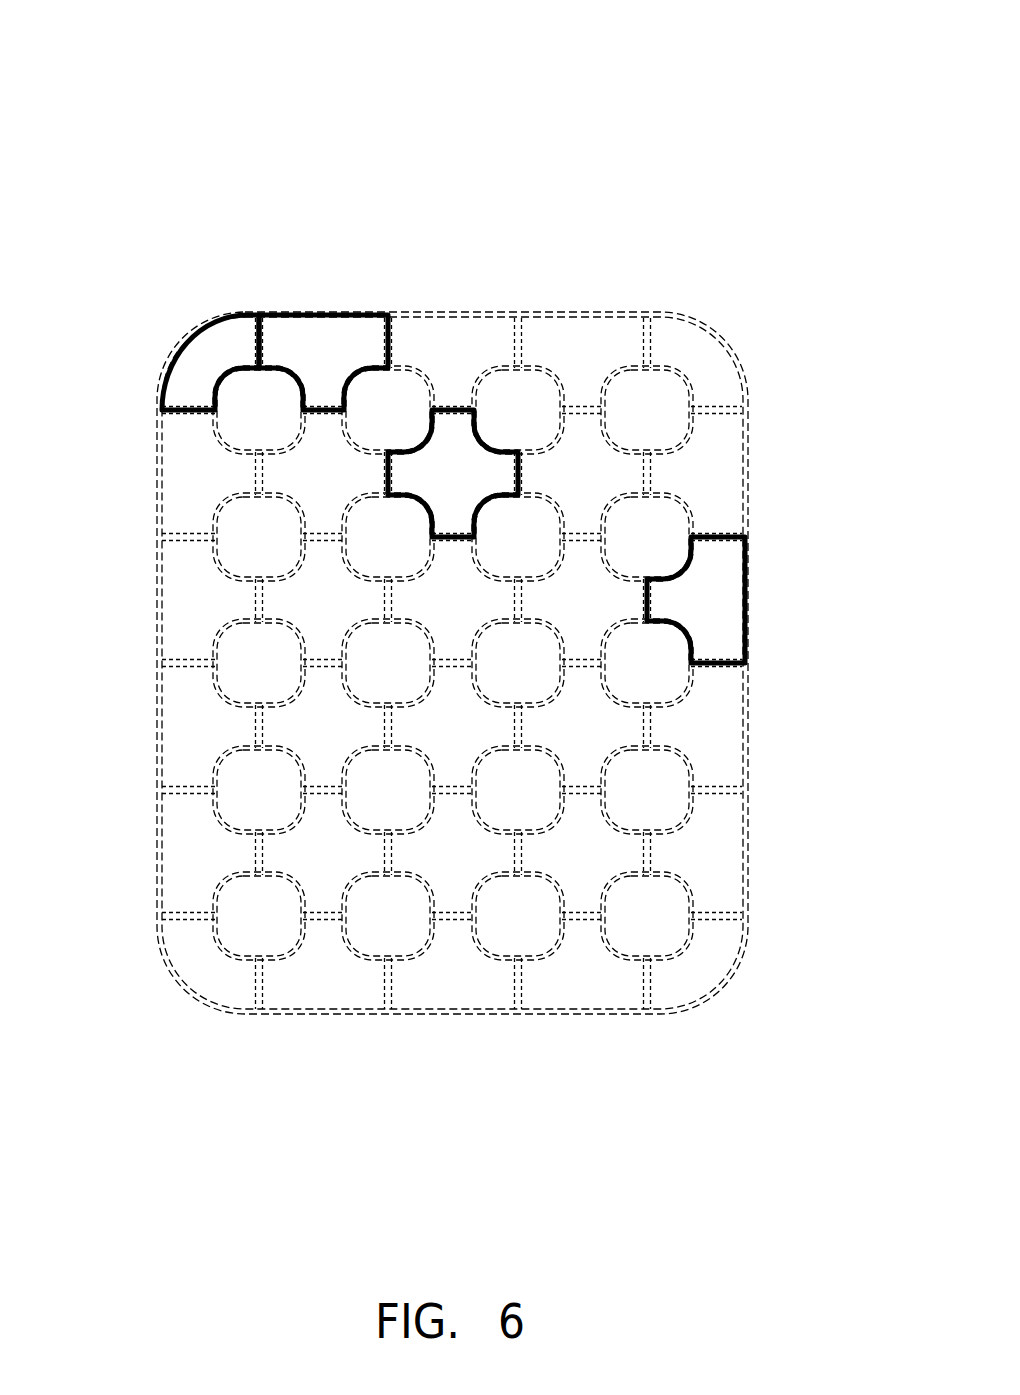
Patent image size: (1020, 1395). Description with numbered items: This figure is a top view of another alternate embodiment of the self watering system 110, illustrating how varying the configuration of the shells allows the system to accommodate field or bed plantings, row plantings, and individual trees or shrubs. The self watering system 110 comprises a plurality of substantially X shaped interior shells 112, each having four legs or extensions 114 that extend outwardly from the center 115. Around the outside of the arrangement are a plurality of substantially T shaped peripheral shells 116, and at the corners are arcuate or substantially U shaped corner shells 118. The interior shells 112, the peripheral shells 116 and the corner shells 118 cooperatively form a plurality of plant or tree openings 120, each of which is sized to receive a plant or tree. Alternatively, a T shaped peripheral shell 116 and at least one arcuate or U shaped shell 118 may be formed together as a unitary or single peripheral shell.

The self watering system 110 is at (403, 138).
The X shaped interior shell 112 is at (440, 367).
The leg 114 is at (405, 473).
The center 115 is at (462, 460).
The T shaped peripheral shell 116 is at (323, 281).
The U shaped corner shell 118 is at (182, 301).
The plant opening 120 is at (545, 364).